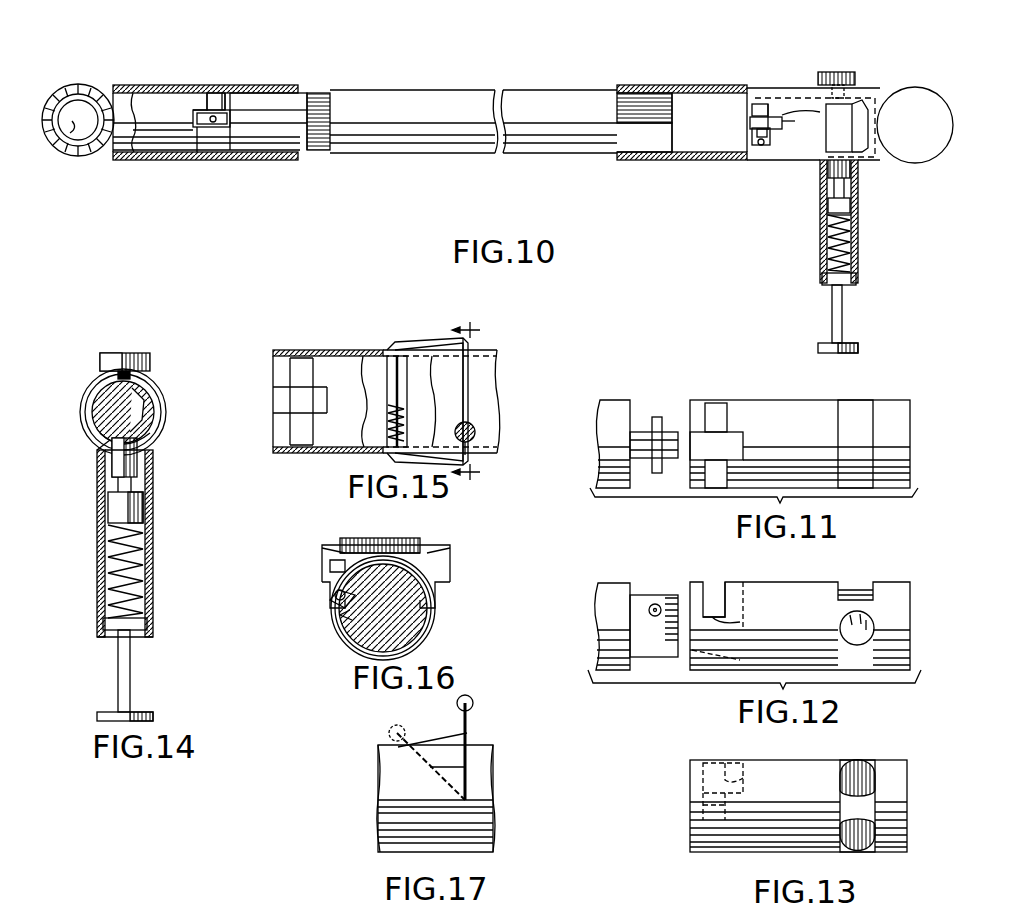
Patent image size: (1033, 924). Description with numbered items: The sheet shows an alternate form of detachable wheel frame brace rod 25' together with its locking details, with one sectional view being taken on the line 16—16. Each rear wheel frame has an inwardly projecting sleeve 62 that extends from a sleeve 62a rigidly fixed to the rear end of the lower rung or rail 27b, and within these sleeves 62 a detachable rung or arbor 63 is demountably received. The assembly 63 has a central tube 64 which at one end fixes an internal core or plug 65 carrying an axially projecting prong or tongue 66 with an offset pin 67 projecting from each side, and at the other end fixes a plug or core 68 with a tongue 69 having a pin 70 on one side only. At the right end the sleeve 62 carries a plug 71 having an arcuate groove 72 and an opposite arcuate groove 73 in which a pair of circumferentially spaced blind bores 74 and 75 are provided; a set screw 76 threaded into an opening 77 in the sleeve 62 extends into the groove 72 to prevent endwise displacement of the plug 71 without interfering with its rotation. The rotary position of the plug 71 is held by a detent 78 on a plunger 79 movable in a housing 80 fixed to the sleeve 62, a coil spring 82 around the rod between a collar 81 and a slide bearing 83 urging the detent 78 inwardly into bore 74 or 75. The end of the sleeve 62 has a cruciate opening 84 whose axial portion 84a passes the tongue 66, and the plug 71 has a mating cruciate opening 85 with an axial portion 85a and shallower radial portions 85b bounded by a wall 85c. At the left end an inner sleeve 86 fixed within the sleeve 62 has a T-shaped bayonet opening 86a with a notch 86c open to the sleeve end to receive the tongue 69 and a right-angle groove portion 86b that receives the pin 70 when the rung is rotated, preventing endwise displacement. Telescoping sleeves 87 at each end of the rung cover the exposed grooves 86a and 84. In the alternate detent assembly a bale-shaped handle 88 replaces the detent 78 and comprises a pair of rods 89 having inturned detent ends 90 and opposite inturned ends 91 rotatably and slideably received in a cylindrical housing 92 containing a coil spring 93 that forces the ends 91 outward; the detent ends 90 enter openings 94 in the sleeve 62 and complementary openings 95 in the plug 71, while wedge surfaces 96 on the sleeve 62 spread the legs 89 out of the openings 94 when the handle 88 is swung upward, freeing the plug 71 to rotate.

In FIG. 10, the sleeve 62a is at (76, 84).
In FIG. 10, the lower rung or rail 27b is at (73, 150).
In FIG. 10, the sleeve 62 is at (150, 85).
In FIG. 14, the sleeve 62 is at (82, 398).
In FIG. 15, the sleeve 62 is at (322, 455).
In FIG. 16, the sleeve 62 is at (435, 618).
In FIG. 17, the sleeve 62 is at (372, 768).
In FIG. 10, the inner sleeve 86 is at (215, 93).
In FIG. 10, the T-shaped bayonet opening 86a is at (192, 135).
In FIG. 10, the groove portion 86b is at (202, 100).
In FIG. 10, the notch 86c is at (208, 128).
In FIG. 10, the tongue 69 is at (225, 95).
In FIG. 10, the pin 70 is at (215, 124).
In FIG. 10, the plug or core 68 is at (272, 105).
In FIG. 10, the telescoping sleeves 87 is at (292, 88).
In FIG. 10, the detachable rung or arbor 63 is at (424, 79).
In FIG. 10, the central tube 64 is at (515, 93).
In FIG. 10, the brace rod 25' is at (717, 88).
In FIG. 10, the internal core or plug 65 is at (720, 100).
In FIG. 11, the internal core or plug 65 is at (610, 408).
In FIG. 12, the internal core or plug 65 is at (614, 595).
In FIG. 10, the prong or tongue 66 is at (775, 117).
In FIG. 11, the prong or tongue 66 is at (640, 432).
In FIG. 12, the prong or tongue 66 is at (672, 597).
In FIG. 10, the offset pin 67 is at (757, 150).
In FIG. 11, the offset pin 67 is at (660, 417).
In FIG. 12, the offset pin 67 is at (655, 604).
In FIG. 10, the cruciate opening 84 is at (768, 104).
In FIG. 10, the axial portion 84a is at (790, 118).
In FIG. 10, the cruciate opening 85 is at (773, 150).
In FIG. 11, the axial portion 85a is at (700, 458).
In FIG. 12, the axial portion 85a is at (690, 650).
In FIG. 13, the axial portion 85a is at (700, 780).
In FIG. 10, the radial portions 85b is at (767, 148).
In FIG. 11, the radial portions 85b is at (717, 410).
In FIG. 12, the radial portions 85b is at (708, 600).
In FIG. 13, the radial portions 85b is at (740, 778).
In FIG. 12, the wall 85c is at (740, 618).
In FIG. 10, the set screw 76 is at (845, 72).
In FIG. 14, the set screw 76 is at (103, 365).
In FIG. 10, the opening 77 is at (868, 95).
In FIG. 14, the opening 77 is at (132, 374).
In FIG. 10, the plug 71 is at (855, 132).
In FIG. 14, the plug 71 is at (98, 420).
In FIG. 16, the plug 71 is at (420, 646).
In FIG. 11, the plug 71 is at (796, 410).
In FIG. 12, the plug 71 is at (805, 590).
In FIG. 13, the plug 71 is at (748, 848).
In FIG. 10, the arcuate groove 72 is at (868, 110).
In FIG. 11, the arcuate groove 72 is at (852, 405).
In FIG. 12, the arcuate groove 72 is at (855, 590).
In FIG. 14, the arcuate groove 73 is at (160, 433).
In FIG. 12, the arcuate groove 73 is at (842, 635).
In FIG. 13, the arcuate groove 73 is at (862, 810).
In FIG. 14, the blind bore 74 is at (143, 400).
In FIG. 13, the blind bore 74 is at (857, 768).
In FIG. 14, the blind bore 75 is at (96, 450).
In FIG. 13, the blind bore 75 is at (857, 850).
In FIG. 10, the detent 78 is at (858, 170).
In FIG. 14, the detent 78 is at (137, 456).
In FIG. 10, the plunger 79 is at (843, 310).
In FIG. 14, the plunger 79 is at (131, 670).
In FIG. 10, the housing 80 is at (820, 248).
In FIG. 14, the housing 80 is at (105, 541).
In FIG. 10, the collar 81 is at (858, 207).
In FIG. 14, the collar 81 is at (108, 510).
In FIG. 10, the coil spring 82 is at (858, 236).
In FIG. 14, the coil spring 82 is at (108, 596).
In FIG. 10, the slide bearing 83 is at (822, 277).
In FIG. 14, the slide bearing 83 is at (103, 623).
In FIG. 15, the bale-shaped handle 88 is at (415, 338).
In FIG. 17, the bale-shaped handle 88 is at (468, 740).
In FIG. 16, the rods 89 is at (322, 578).
In FIG. 15, the inturned detent ends 90 is at (397, 352).
In FIG. 16, the inturned detent ends 90 is at (338, 630).
In FIG. 16, the inturned ends 91 is at (323, 545).
In FIG. 15, the cylindrical housing 92 is at (395, 370).
In FIG. 16, the cylindrical housing 92 is at (365, 538).
In FIG. 17, the cylindrical housing 92 is at (474, 705).
In FIG. 16, the coil spring 93 is at (385, 540).
In FIG. 16, the openings 94 is at (335, 597).
In FIG. 16, the openings 95 is at (345, 640).
In FIG. 15, the wedge surfaces 96 is at (419, 401).
In FIG. 16, the wedge surfaces 96 is at (330, 565).
In FIG. 15, the section line 16 is at (481, 402).